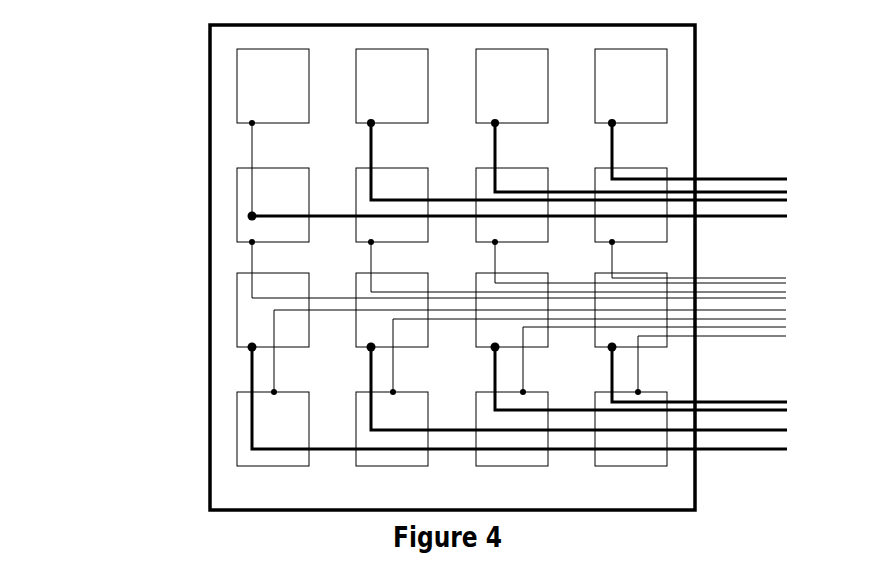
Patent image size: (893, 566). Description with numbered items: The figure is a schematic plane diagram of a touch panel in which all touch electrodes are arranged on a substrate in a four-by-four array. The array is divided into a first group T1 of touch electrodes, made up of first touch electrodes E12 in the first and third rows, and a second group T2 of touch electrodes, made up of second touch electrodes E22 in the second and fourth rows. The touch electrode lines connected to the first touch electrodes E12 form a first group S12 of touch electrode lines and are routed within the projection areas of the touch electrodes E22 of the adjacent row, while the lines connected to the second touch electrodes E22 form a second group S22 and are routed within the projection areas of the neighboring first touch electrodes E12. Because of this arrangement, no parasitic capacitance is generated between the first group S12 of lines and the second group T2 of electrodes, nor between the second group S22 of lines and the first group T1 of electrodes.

The first touch electrode E12 is at (452, 198).
The second touch electrode E22 is at (452, 317).
The first group of touch electrode lines S12 is at (788, 176).
The second group of touch electrode lines S22 is at (788, 276).
The first group of touch electrodes T1 is at (245, 305).
The second group of touch electrodes T2 is at (245, 198).